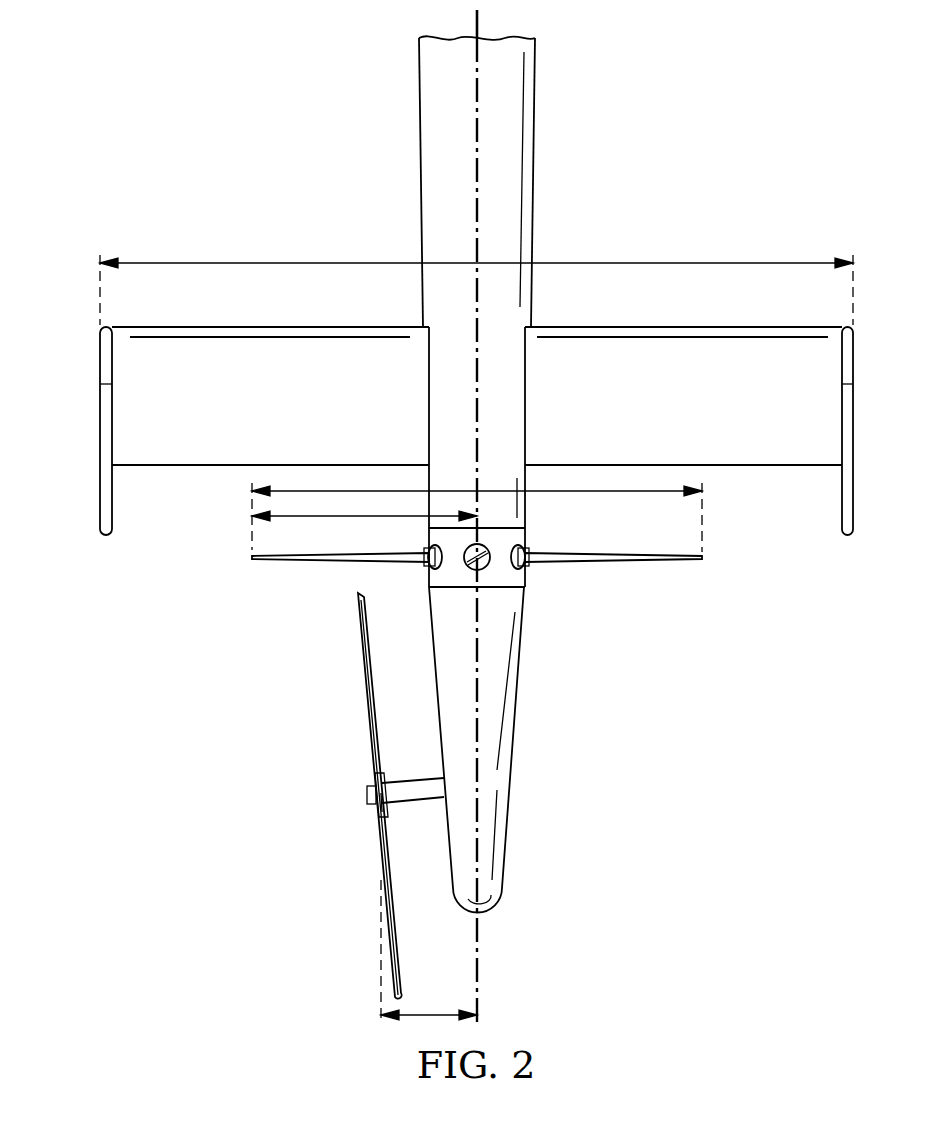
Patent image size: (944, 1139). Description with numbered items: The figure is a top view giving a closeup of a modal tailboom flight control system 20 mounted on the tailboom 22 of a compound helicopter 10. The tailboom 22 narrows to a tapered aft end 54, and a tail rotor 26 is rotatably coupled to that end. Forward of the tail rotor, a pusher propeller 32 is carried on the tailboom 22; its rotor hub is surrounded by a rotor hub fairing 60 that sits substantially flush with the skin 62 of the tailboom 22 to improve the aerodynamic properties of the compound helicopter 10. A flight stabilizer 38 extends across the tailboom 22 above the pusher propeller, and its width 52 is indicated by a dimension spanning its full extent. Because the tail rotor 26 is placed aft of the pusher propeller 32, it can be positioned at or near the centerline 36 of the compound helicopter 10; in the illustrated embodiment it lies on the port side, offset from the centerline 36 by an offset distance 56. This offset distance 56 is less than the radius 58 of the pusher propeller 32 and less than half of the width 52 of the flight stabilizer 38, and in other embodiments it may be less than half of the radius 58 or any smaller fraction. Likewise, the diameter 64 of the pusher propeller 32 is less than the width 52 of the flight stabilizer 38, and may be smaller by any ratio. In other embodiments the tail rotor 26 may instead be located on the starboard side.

The compound helicopter 10 is at (447, 516).
The modal tailboom flight control system 20 is at (447, 516).
The tailboom 22 is at (513, 130).
The tail rotor 26 is at (363, 683).
The pusher propeller 32 is at (608, 560).
The centerline 36 is at (478, 948).
The flight stabilizer 38 is at (118, 358).
The width 52 is at (272, 263).
The tapered aft end 54 is at (490, 780).
The offset distance 56 is at (428, 1012).
The radius 58 is at (364, 520).
The rotor hub fairing 60 is at (450, 578).
The skin 62 is at (420, 183).
The diameter 64 is at (415, 490).